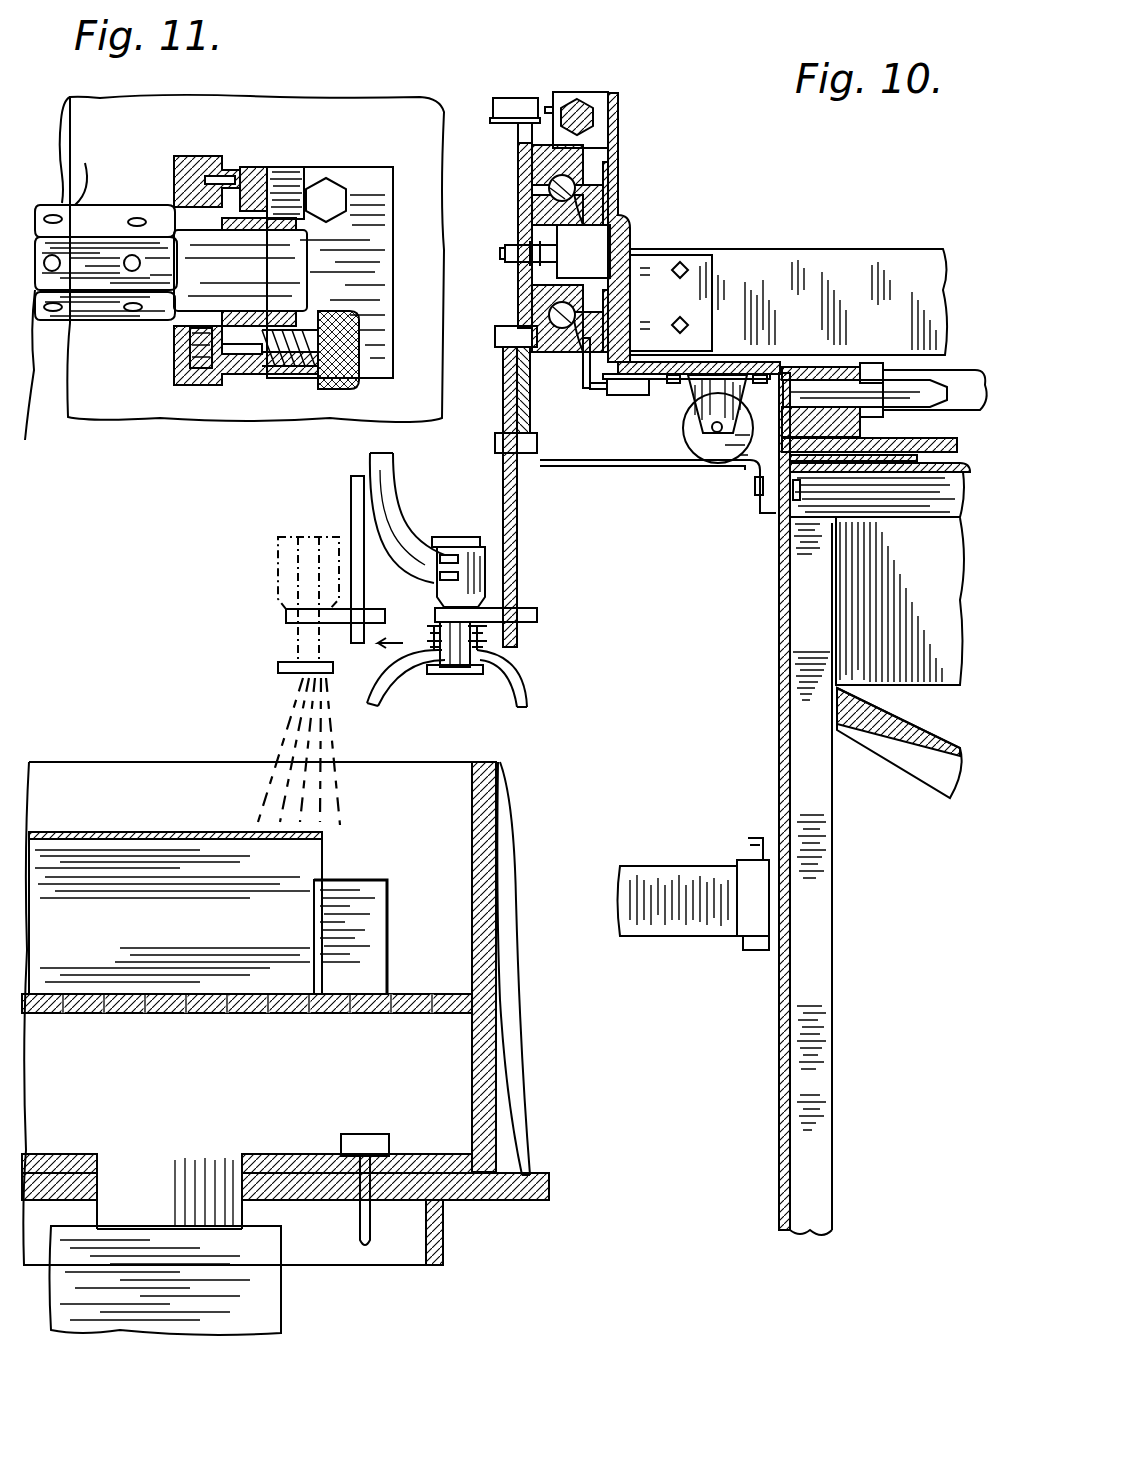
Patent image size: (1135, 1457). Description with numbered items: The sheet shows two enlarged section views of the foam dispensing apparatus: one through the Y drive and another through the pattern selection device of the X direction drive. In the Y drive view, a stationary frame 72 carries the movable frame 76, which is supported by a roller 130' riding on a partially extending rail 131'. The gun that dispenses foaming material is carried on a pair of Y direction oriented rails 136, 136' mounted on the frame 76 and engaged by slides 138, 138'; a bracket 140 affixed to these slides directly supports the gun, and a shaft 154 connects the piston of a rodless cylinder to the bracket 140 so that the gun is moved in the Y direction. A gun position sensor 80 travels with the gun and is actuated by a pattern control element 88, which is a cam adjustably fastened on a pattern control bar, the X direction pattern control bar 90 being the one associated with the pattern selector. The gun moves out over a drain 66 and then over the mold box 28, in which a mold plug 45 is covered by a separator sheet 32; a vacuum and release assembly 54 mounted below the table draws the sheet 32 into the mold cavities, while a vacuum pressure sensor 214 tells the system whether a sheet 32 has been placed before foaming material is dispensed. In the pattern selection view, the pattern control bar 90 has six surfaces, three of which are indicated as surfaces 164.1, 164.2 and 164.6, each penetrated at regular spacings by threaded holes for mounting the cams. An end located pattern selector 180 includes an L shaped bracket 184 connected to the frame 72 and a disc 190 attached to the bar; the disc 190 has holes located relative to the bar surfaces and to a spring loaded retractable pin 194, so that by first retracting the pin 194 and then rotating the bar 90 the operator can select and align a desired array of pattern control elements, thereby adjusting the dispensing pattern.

In FIG. 10, the mold box 28 is at (195, 762).
In FIG. 10, the separator sheet 32 is at (522, 825).
In FIG. 10, the mold plug 45 is at (150, 832).
In FIG. 10, the vacuum and release assembly 54 is at (270, 1310).
In FIG. 10, the drain 66 is at (690, 936).
In FIG. 10, the frame 72 is at (832, 900).
In FIG. 10, the frame 76 is at (830, 270).
In FIG. 10, the gun position sensor 80 is at (510, 98).
In FIG. 10, the pattern control element 88 is at (562, 92).
In FIG. 11, the pattern control bar 90 is at (82, 166).
In FIG. 10, the pattern control bar 90 is at (935, 395).
In FIG. 10, the roller 130' is at (694, 419).
In FIG. 10, the rail 131' is at (658, 498).
In FIG. 10, the rail 136 is at (518, 200).
In FIG. 10, the rail 136' is at (576, 381).
In FIG. 10, the slide 138 is at (529, 184).
In FIG. 10, the slide 138' is at (526, 318).
In FIG. 10, the bracket 140 is at (530, 530).
In FIG. 10, the shaft 154 is at (505, 257).
In FIG. 11, the pattern bar surface 164.1 is at (102, 341).
In FIG. 11, the pattern bar surface 164.2 is at (103, 310).
In FIG. 11, the pattern bar surface 164.6 is at (140, 188).
In FIG. 11, the pattern selector 180 is at (350, 220).
In FIG. 11, the L shaped bracket 184 is at (292, 167).
In FIG. 11, the disc 190 is at (188, 385).
In FIG. 11, the spring loaded retractable pin 194 is at (332, 372).
In FIG. 10, the vacuum pressure sensor 214 is at (365, 1134).